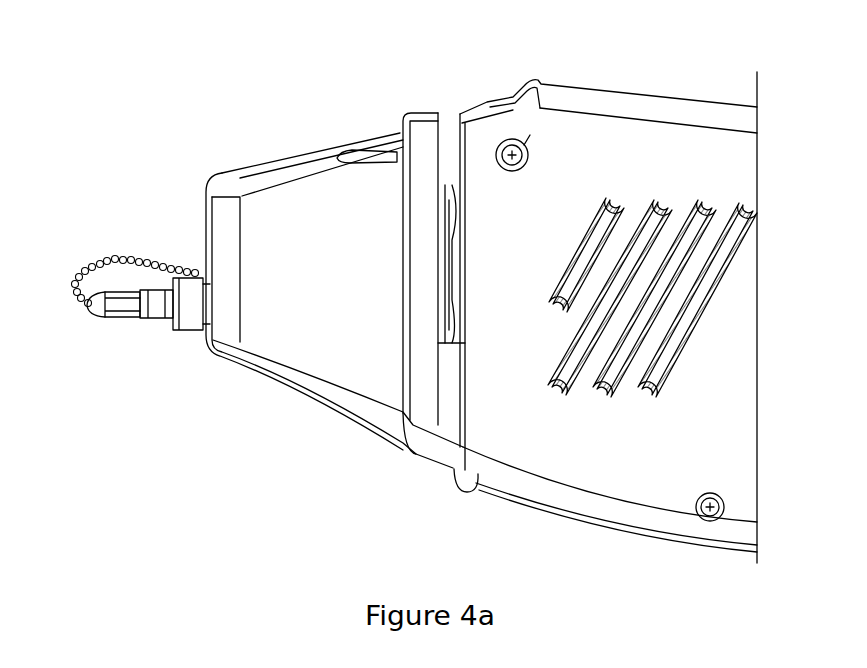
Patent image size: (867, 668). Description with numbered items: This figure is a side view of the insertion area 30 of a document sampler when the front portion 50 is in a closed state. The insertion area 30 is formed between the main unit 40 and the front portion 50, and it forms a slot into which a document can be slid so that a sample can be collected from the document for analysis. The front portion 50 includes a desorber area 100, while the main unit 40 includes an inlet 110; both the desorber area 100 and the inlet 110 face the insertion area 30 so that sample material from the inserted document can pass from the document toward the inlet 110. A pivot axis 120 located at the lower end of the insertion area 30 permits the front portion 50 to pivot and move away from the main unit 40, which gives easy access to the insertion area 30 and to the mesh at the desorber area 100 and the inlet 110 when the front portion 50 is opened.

The insertion area 30 is at (449, 96).
The main unit 40 is at (655, 74).
The front portion 50 is at (264, 136).
The desorber area 100 is at (445, 243).
The inlet 110 is at (460, 250).
The pivot axis 120 is at (453, 477).